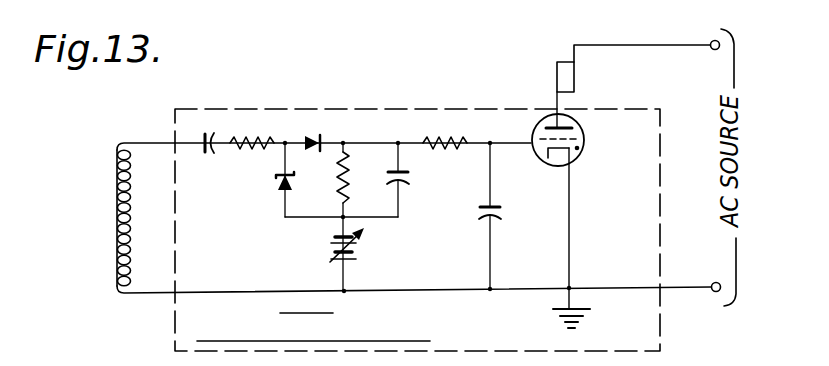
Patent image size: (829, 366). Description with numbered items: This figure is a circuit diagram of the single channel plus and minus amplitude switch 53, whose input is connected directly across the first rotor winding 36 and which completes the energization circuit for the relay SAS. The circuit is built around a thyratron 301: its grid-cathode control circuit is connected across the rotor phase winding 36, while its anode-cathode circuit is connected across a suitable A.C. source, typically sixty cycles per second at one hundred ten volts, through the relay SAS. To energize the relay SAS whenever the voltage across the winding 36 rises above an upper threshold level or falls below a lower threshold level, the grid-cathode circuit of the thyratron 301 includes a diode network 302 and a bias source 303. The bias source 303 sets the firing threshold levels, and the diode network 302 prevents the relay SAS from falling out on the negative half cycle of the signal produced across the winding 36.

The first rotor winding 36 is at (115, 238).
The plus and minus amplitude switch 53 is at (300, 85).
The diode network 302 is at (268, 165).
The bias source 303 is at (360, 252).
The thyratron 301 is at (583, 156).
The relay SAS is at (575, 76).